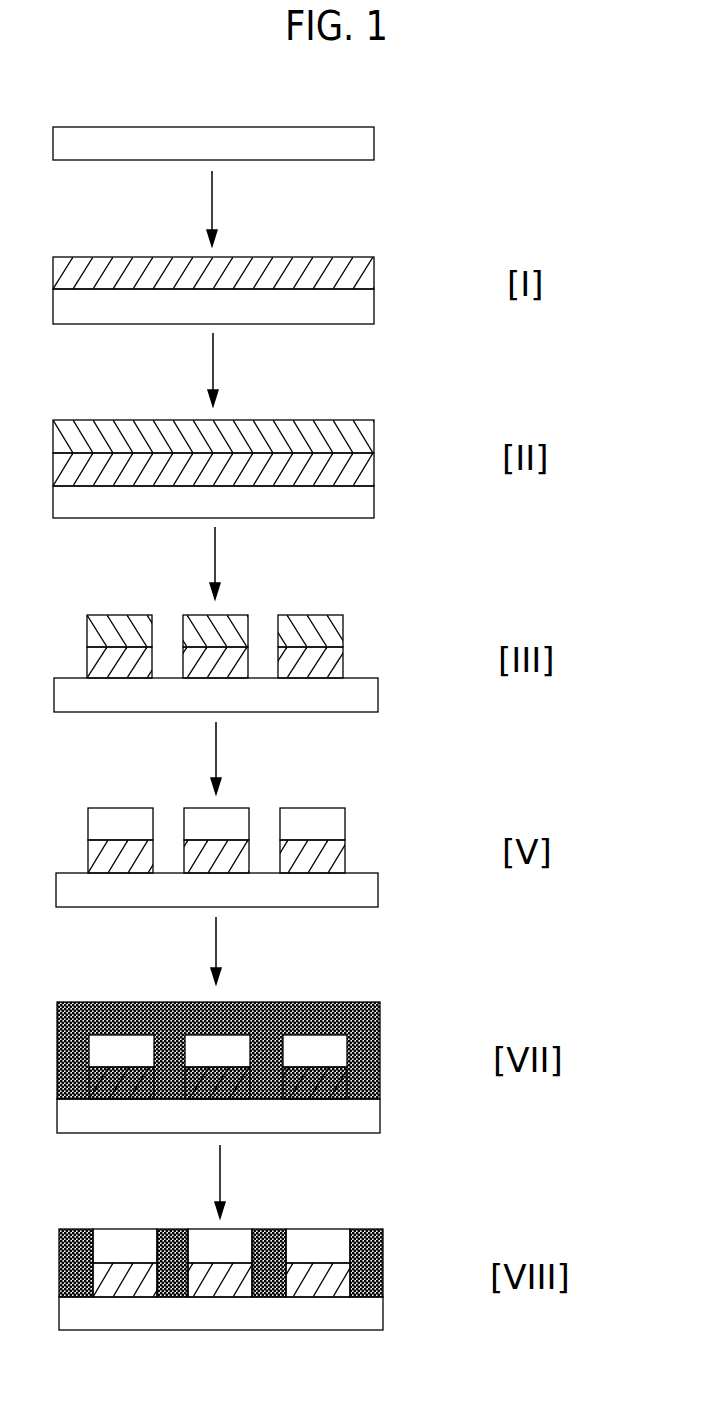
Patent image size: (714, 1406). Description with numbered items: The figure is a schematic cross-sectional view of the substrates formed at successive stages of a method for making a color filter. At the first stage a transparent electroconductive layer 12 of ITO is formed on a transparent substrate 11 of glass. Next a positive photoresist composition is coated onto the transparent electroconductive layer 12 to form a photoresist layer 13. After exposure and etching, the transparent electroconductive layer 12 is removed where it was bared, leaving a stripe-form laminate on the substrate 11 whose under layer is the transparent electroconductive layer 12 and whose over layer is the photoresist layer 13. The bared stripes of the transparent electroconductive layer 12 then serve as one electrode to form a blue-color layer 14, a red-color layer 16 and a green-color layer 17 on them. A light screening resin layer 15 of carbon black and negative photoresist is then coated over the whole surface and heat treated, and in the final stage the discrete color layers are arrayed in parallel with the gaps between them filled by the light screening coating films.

The transparent substrate 11 is at (374, 142).
The transparent electroconductive layer 12 is at (374, 272).
The photoresist layer 13 is at (374, 435).
The blue-color layer 14 is at (345, 822).
The light screening resin layer 15 is at (380, 1022).
The red-color layer 16 is at (118, 807).
The green-color layer 17 is at (202, 807).